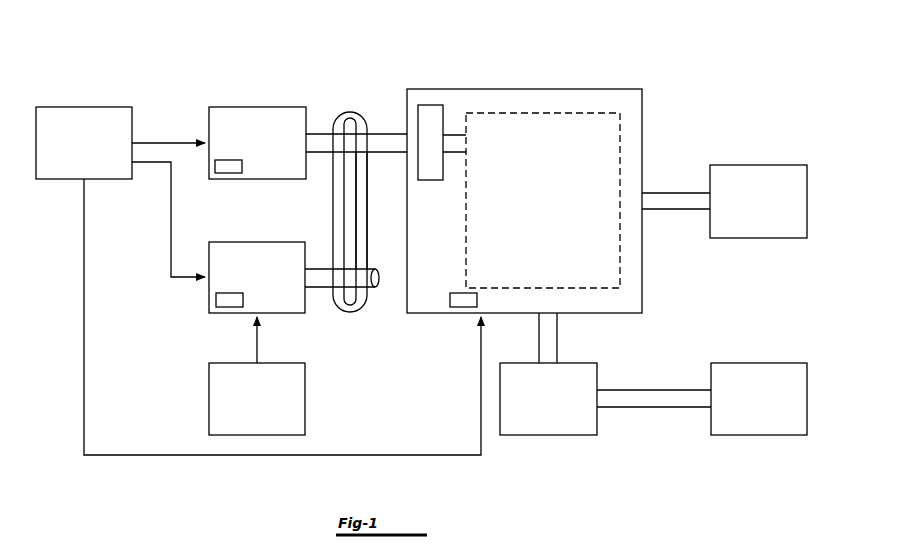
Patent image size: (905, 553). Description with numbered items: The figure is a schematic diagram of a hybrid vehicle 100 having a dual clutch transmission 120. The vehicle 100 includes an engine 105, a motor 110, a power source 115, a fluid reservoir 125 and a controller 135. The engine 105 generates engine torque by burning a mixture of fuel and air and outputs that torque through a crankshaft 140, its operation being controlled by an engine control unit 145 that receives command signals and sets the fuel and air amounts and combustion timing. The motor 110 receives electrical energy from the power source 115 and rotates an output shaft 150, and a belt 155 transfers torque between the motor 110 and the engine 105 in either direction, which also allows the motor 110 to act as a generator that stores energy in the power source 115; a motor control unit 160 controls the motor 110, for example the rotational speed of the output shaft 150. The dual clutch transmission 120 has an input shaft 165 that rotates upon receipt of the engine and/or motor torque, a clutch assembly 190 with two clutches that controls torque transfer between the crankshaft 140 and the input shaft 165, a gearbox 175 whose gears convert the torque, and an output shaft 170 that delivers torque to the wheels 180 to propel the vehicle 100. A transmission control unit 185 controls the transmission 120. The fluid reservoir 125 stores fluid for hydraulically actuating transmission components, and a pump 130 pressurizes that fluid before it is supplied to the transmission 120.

The vehicle 100 is at (103, 40).
The engine 105 is at (257, 143).
The motor 110 is at (257, 277).
The power source 115 is at (257, 399).
The dual clutch transmission 120 is at (543, 88).
The fluid reservoir 125 is at (759, 399).
The pump 130 is at (548, 399).
The controller 135 is at (84, 143).
The crankshaft 140 is at (318, 132).
The engine control unit 145 is at (228, 173).
The output shaft 150 is at (380, 279).
The belt 155 is at (336, 201).
The motor control unit 160 is at (228, 307).
The input shaft 165 is at (457, 133).
The output shaft 170 is at (676, 192).
The gearbox 175 is at (620, 272).
The wheels 180 is at (758, 201).
The transmission control unit 185 is at (464, 307).
The clutch assembly 190 is at (417, 113).